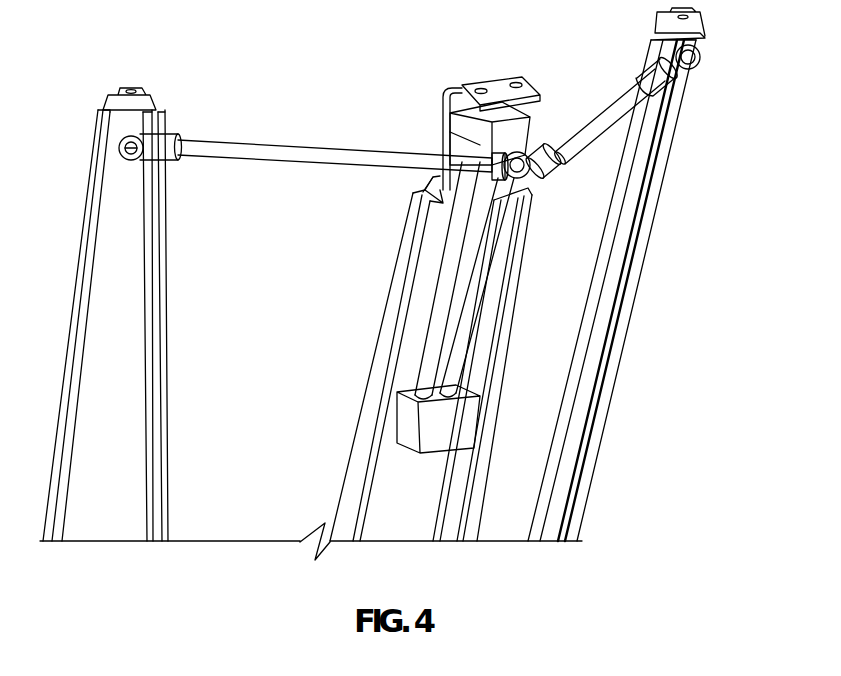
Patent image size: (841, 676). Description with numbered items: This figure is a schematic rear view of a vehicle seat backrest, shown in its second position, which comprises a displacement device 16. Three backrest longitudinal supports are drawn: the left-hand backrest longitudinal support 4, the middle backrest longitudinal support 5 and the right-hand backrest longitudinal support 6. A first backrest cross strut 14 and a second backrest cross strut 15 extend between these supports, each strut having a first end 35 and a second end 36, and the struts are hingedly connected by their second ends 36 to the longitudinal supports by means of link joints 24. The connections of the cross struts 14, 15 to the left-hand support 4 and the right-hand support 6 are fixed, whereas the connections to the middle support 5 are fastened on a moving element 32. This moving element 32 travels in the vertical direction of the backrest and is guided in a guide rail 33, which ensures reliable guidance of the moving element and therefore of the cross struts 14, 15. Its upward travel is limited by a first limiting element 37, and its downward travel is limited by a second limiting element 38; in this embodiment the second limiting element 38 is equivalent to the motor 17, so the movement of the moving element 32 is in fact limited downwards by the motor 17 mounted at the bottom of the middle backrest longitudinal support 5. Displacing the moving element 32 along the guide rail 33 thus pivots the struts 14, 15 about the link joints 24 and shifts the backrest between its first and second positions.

The left-hand backrest longitudinal support 4 is at (645, 220).
The middle backrest longitudinal support 5 is at (405, 288).
The right-hand backrest longitudinal support 6 is at (118, 378).
The first backrest cross strut 14 is at (625, 105).
The second backrest cross strut 15 is at (276, 147).
The displacement device 16 is at (489, 460).
The motor 17 is at (375, 317).
The second limiting element 38 is at (410, 408).
The link joint 24 is at (113, 150).
The moving element 32 is at (523, 143).
The guide rail 33 is at (450, 140).
The first end 35 is at (171, 140).
The second end 36 is at (545, 148).
The first limiting element 37 is at (455, 118).